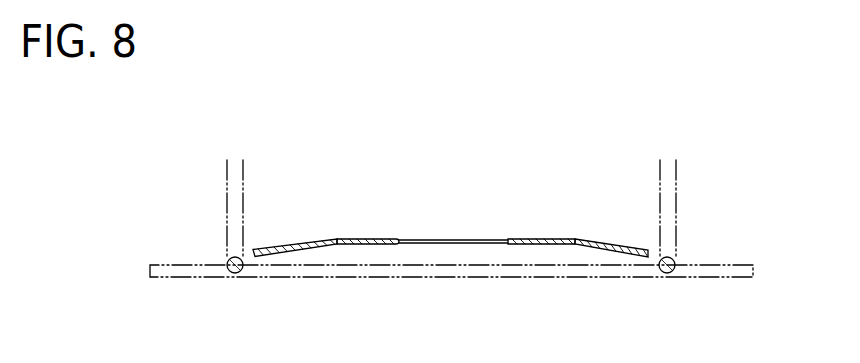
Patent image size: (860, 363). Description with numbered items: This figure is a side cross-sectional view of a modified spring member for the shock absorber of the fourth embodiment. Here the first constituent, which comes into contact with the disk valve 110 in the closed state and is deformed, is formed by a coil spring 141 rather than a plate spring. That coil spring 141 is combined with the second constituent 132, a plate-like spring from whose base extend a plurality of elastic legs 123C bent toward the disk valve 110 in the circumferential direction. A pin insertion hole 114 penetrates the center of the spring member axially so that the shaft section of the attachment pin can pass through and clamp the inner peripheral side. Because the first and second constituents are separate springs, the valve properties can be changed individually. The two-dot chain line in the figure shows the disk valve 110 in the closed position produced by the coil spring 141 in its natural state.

The disk valve 110 is at (723, 265).
The coil spring 141 is at (665, 274).
The elastic leg 123C is at (296, 243).
The pin insertion hole 114 is at (409, 238).
The second constituent 132 is at (562, 239).